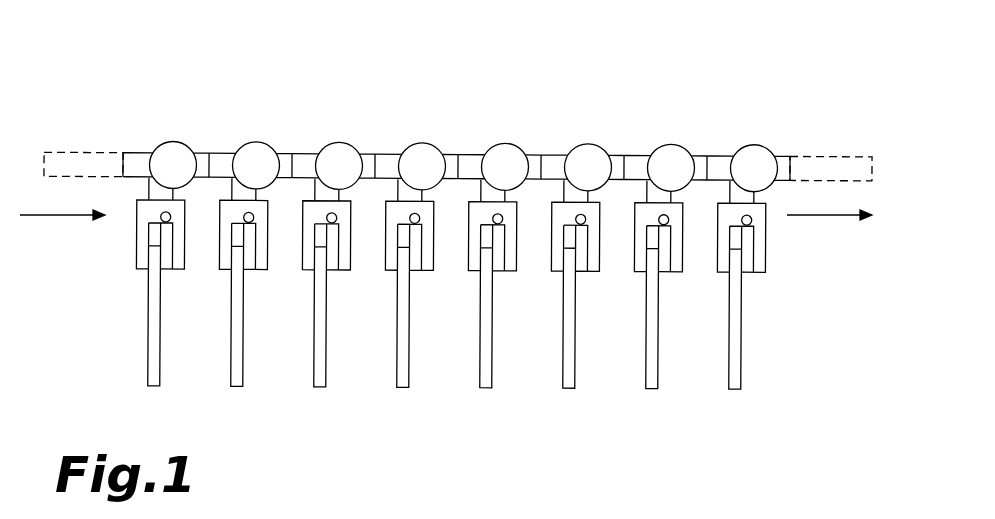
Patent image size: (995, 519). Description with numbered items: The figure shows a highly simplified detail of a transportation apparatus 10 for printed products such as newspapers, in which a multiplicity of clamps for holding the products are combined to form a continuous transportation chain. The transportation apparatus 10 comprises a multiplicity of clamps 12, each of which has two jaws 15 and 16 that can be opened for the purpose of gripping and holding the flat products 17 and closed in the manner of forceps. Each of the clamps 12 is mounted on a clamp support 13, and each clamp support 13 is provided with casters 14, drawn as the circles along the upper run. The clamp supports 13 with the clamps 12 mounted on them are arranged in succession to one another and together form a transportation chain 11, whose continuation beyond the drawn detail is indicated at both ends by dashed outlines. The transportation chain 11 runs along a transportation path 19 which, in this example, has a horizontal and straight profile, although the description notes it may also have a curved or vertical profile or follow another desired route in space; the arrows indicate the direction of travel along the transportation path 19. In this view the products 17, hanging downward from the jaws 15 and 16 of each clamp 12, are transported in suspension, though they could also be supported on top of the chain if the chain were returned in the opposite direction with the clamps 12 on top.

The transportation apparatus 10 is at (453, 246).
The transportation chain 11 is at (810, 165).
The clamp 12 is at (565, 210).
The clamp support 13 is at (621, 158).
The caster 14 is at (587, 158).
The jaw 15 is at (553, 270).
The jaw 16 is at (580, 265).
The flat product 17 is at (567, 378).
The transportation path 19 is at (812, 217).